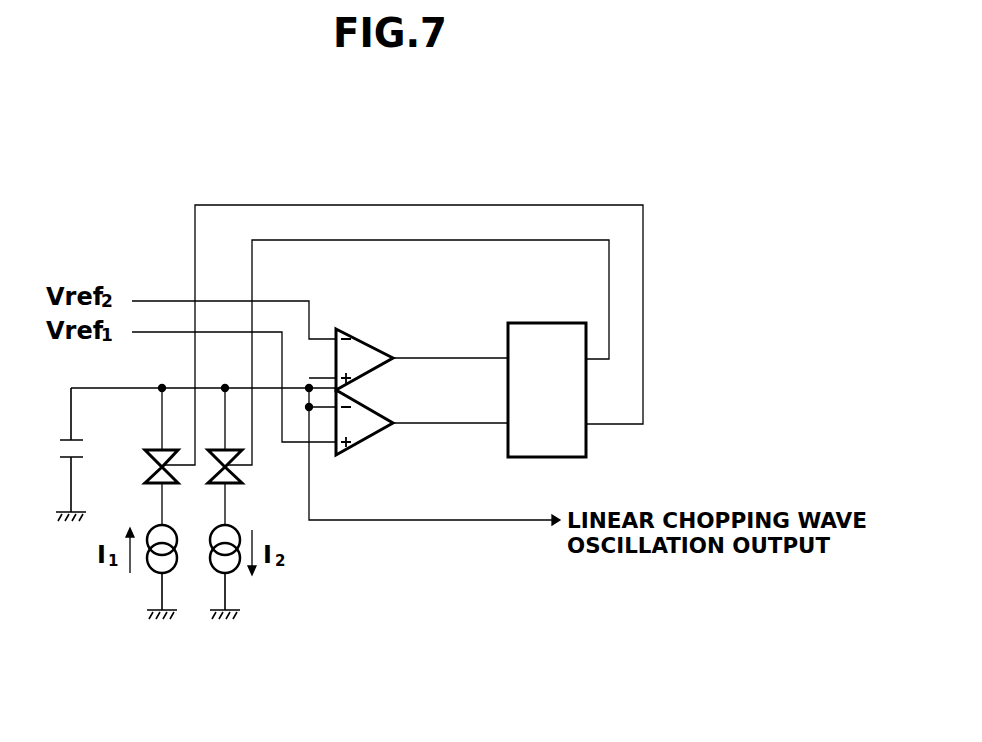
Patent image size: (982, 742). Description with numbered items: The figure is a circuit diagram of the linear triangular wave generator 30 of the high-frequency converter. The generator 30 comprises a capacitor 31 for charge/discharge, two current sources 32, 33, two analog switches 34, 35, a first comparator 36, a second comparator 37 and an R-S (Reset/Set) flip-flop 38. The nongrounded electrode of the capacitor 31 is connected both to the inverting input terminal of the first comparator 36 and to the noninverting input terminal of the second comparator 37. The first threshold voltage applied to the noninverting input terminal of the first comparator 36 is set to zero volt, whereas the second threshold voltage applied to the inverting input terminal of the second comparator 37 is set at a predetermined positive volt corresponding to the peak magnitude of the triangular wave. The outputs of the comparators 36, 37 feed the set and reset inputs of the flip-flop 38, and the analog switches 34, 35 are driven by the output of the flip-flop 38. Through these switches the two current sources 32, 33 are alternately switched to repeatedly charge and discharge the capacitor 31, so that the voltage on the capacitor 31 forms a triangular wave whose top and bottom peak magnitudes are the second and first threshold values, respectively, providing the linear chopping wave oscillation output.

The linear chopping wave oscillation circuit 30 is at (365, 187).
The capacitor 31 is at (60, 448).
The current source 32 is at (150, 565).
The current source 33 is at (236, 565).
The analog switch 34 is at (156, 453).
The analog switch 35 is at (232, 484).
The first comparator 36 is at (377, 401).
The second comparator 37 is at (384, 317).
The R-S flip-flop 38 is at (523, 458).